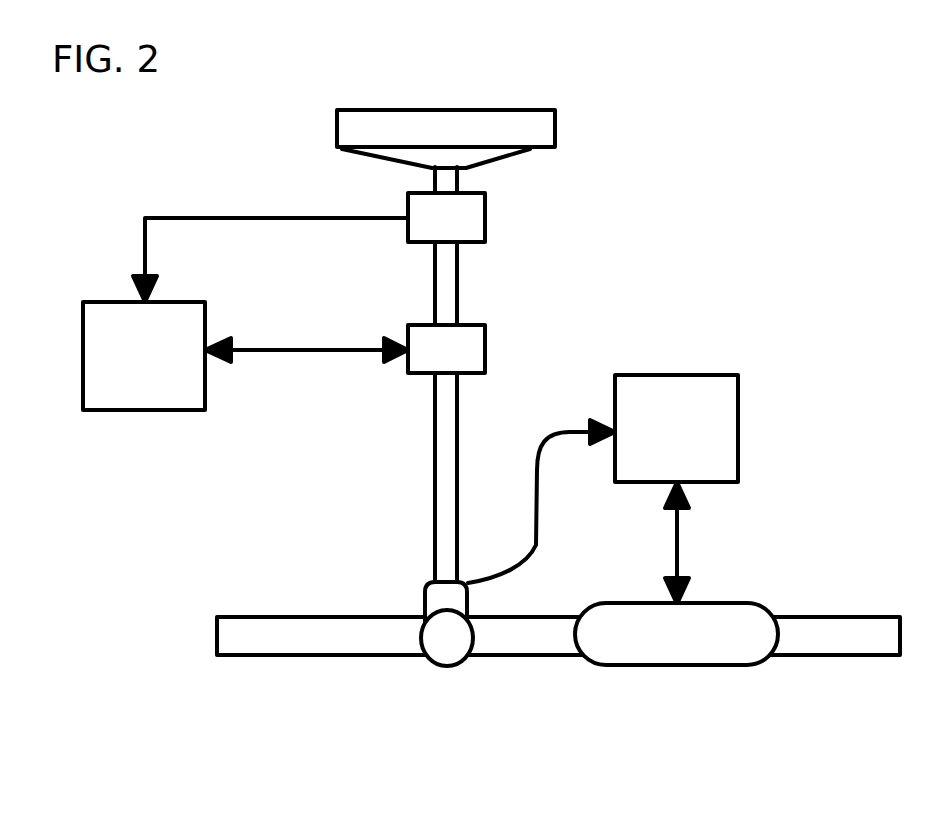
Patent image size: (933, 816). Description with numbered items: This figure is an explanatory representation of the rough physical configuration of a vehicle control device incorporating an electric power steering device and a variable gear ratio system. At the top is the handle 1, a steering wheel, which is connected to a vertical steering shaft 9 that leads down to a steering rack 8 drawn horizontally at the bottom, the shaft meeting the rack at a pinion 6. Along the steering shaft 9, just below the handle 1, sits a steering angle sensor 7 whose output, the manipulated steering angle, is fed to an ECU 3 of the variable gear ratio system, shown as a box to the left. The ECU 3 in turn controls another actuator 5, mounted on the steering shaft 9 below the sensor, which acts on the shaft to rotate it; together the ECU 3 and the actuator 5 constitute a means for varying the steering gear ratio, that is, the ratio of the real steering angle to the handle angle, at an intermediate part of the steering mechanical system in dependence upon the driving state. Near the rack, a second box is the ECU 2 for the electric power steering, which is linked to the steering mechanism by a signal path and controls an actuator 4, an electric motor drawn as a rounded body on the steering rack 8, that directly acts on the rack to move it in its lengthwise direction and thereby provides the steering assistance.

The handle (steering wheel) 1 is at (410, 125).
The ECU for EPS 2 is at (725, 470).
The ECU of VGRS 3 is at (135, 400).
The actuator 4 is at (663, 655).
The actuator 5 is at (472, 348).
The pinion 6 is at (433, 598).
The steering angle sensor 7 is at (470, 220).
The steering rack 8 is at (322, 648).
The steering shaft 9 is at (442, 288).